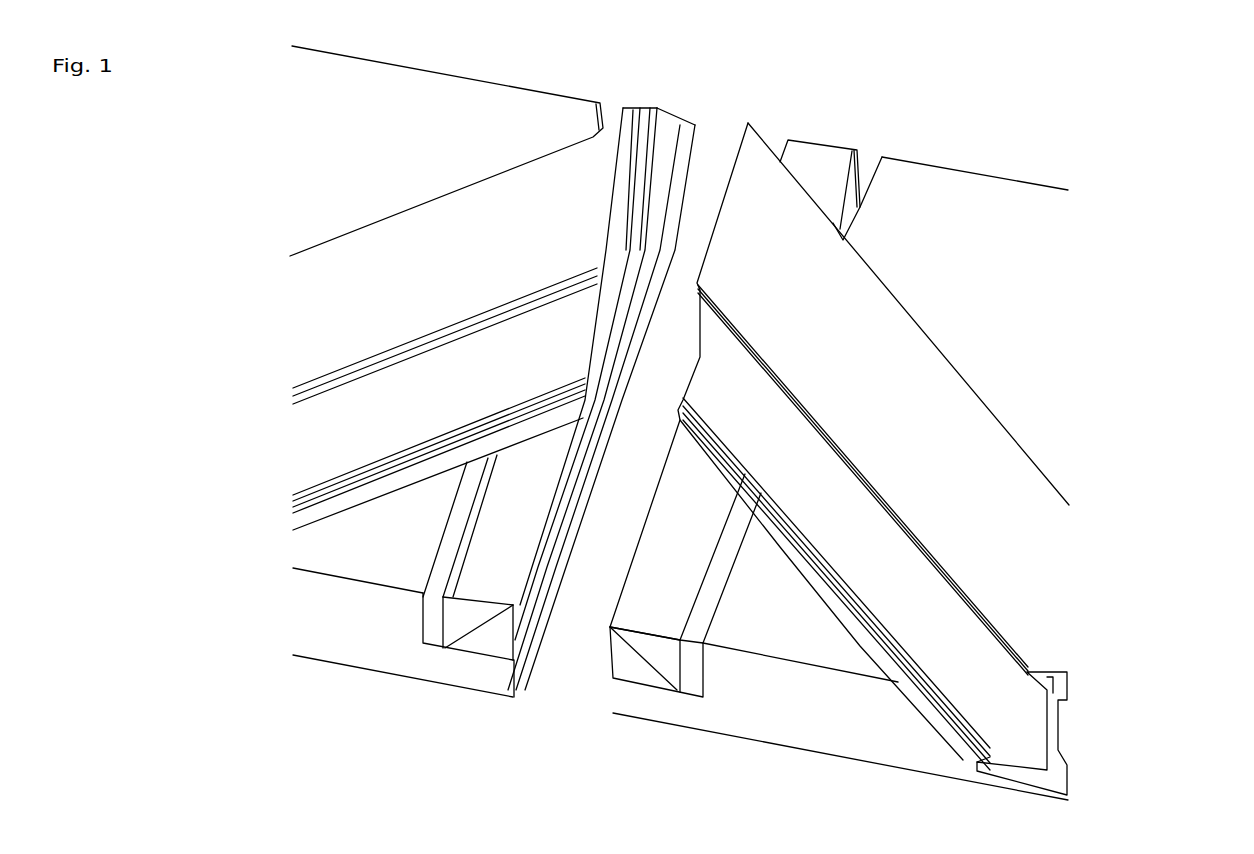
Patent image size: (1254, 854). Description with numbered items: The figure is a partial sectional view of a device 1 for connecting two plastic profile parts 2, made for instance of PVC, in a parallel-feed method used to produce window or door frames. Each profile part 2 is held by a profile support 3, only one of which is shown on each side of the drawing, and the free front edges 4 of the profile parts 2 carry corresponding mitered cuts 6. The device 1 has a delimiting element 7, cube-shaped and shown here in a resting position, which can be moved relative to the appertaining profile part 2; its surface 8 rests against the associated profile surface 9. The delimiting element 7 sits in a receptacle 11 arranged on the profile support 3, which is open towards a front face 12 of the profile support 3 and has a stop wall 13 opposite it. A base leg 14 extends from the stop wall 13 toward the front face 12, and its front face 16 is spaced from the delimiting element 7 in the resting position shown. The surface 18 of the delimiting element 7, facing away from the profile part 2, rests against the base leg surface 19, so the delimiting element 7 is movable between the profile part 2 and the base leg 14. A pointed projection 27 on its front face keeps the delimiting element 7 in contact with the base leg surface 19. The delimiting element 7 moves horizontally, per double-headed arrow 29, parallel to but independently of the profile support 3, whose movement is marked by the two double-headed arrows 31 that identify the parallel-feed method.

The device 1 is at (1163, 101).
The profile parts 2 is at (331, 316).
The profile support 3 is at (341, 132).
The free front edges 4 is at (659, 131).
The mitered cuts 6 is at (601, 399).
The delimiting element 7 is at (823, 156).
The surface 8 is at (844, 161).
The profile surface 9 is at (670, 507).
The receptacle 11 is at (432, 639).
The front face 12 is at (685, 410).
The stop wall 13 is at (441, 558).
The base leg 14 is at (461, 670).
The front face 16 is at (597, 698).
The surface 18 is at (484, 652).
The base leg surface 19 is at (653, 696).
The projection 27 is at (528, 620).
The double-headed arrow 29 is at (538, 501).
The double-headed arrows 31 is at (470, 139).